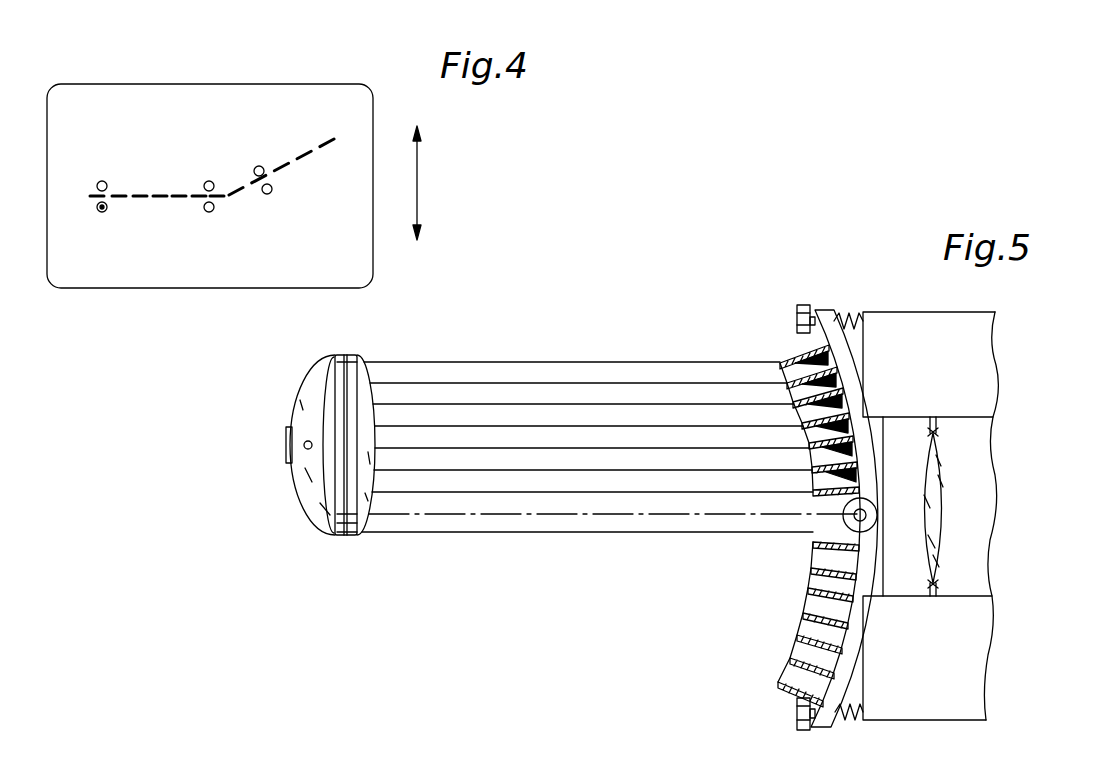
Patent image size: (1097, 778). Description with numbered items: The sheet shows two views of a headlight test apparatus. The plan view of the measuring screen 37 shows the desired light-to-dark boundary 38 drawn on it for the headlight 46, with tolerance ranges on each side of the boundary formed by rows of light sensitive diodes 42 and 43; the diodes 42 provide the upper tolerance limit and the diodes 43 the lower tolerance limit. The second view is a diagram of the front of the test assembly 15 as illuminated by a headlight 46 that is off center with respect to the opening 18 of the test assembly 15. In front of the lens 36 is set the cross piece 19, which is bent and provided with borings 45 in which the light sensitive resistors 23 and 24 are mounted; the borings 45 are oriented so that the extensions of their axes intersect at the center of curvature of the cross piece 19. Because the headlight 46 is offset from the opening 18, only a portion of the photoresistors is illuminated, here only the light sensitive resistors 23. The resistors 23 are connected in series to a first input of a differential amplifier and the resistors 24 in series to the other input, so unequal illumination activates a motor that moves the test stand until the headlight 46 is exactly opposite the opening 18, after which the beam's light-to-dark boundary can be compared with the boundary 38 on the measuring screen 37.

In FIG. 5, the test assembly 15 is at (970, 366).
In FIG. 5, the opening 18 is at (876, 423).
In FIG. 5, the cross piece 19 is at (834, 350).
In FIG. 5, the light sensitive resistors 23 is at (850, 404).
In FIG. 5, the light sensitive resistors 24 is at (843, 643).
In FIG. 5, the lens 36 is at (940, 516).
In FIG. 4, the measuring screen 37 is at (130, 258).
In FIG. 4, the light-to-dark boundary 38 is at (179, 190).
In FIG. 4, the light sensitive diodes 42 is at (103, 181).
In FIG. 4, the light sensitive diodes 43 is at (101, 213).
In FIG. 5, the borings 45 is at (818, 418).
In FIG. 5, the headlight 46 is at (318, 475).